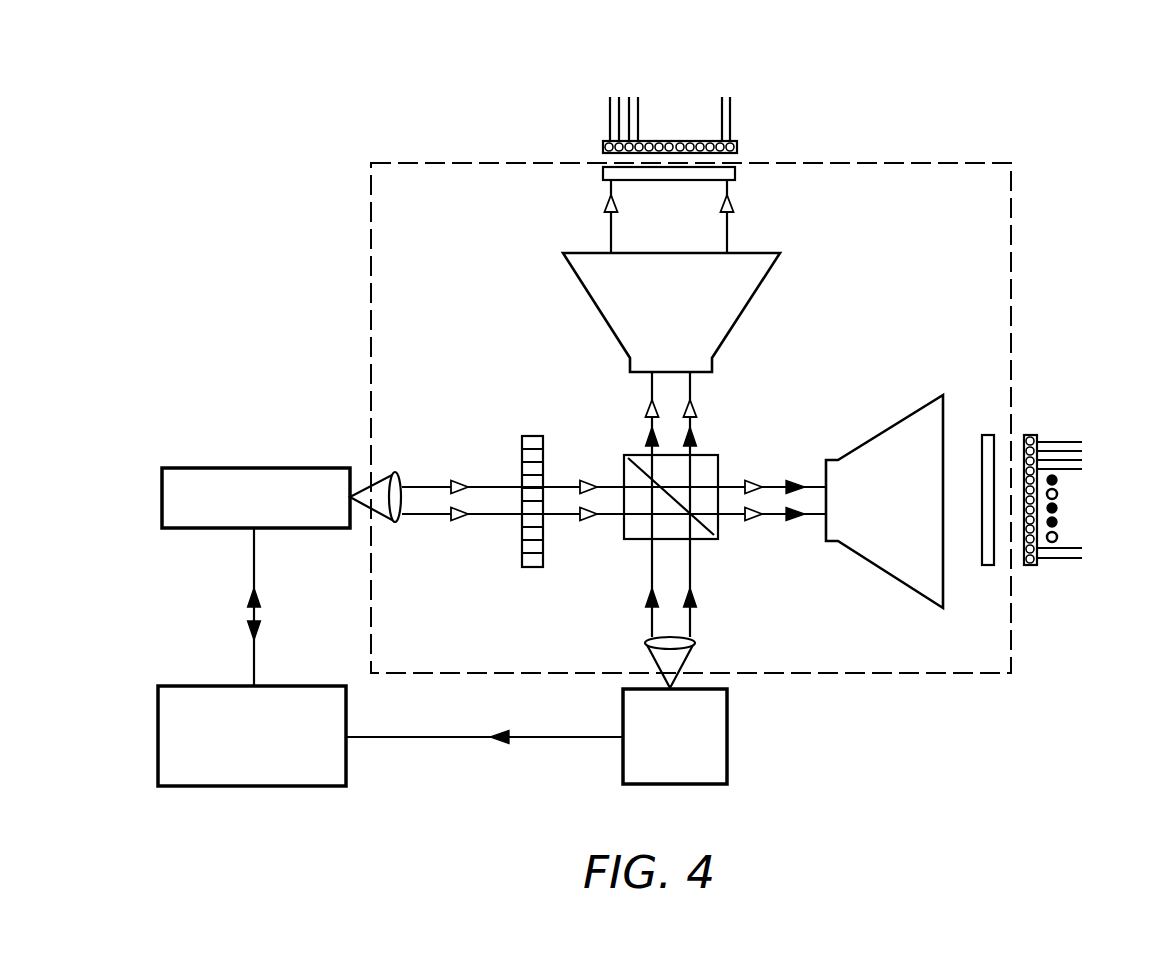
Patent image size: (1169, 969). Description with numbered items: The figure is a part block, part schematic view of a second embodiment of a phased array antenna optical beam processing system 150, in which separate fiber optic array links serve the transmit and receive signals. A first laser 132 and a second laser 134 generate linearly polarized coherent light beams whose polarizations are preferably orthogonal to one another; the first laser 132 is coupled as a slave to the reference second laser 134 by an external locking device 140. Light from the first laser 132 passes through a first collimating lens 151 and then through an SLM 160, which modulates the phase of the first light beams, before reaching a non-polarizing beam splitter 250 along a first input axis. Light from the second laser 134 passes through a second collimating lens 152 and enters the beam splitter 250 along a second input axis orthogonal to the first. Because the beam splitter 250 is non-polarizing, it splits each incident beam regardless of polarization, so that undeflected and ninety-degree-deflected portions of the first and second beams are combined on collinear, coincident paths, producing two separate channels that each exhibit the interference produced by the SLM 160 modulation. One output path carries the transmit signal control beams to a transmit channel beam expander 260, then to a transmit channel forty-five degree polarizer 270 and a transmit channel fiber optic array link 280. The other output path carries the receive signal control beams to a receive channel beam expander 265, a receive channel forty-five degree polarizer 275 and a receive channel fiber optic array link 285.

The first laser 132 is at (222, 468).
The second laser 134 is at (730, 710).
The external locking device 140 is at (236, 686).
The beam processing system 150 is at (838, 163).
The first collimating lens 151 is at (400, 474).
The second collimating lens 152 is at (690, 660).
The SLM 160 is at (533, 436).
The non-polarizing beam splitter 250 is at (698, 455).
The transmit channel beam expander 260 is at (748, 298).
The receive channel beam expander 265 is at (902, 418).
The transmit channel 45° polarizer 270 is at (736, 174).
The receive channel 45° polarizer 275 is at (987, 433).
The transmit channel fiber optic array link 280 is at (752, 96).
The receive channel fiber optic array link 285 is at (1080, 418).